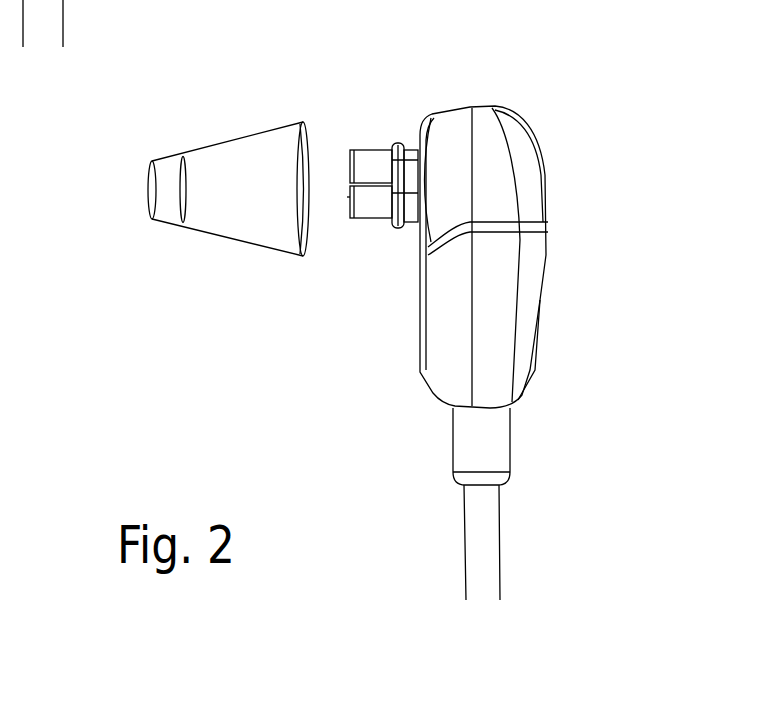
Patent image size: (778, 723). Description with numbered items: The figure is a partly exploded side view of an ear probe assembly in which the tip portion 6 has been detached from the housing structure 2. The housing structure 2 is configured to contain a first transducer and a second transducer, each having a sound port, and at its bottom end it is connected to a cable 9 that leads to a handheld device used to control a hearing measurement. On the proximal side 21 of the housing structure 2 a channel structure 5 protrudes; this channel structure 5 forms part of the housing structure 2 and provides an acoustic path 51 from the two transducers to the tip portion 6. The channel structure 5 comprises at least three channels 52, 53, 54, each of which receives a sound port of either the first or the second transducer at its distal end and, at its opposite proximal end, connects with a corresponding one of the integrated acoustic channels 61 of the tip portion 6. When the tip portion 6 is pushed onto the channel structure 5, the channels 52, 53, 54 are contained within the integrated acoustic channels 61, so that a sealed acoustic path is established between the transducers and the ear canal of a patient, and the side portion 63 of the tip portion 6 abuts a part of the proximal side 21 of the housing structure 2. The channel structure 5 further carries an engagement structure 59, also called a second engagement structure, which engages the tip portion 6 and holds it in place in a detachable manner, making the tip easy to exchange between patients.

The housing structure 2 is at (465, 295).
The proximal side 21 is at (422, 298).
The channel structure 5 is at (375, 149).
The acoustic path 51 is at (347, 197).
The channel 52 is at (380, 210).
The channel 53 is at (352, 175).
The channel 54 is at (372, 163).
The engagement structure 59 is at (405, 142).
The tip portion 6 is at (186, 213).
The integrated acoustic channels 61 is at (150, 167).
The side portion 63 is at (307, 238).
The cable 9 is at (487, 527).